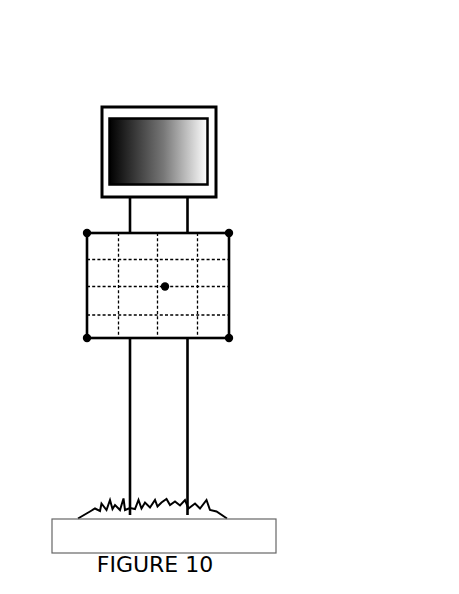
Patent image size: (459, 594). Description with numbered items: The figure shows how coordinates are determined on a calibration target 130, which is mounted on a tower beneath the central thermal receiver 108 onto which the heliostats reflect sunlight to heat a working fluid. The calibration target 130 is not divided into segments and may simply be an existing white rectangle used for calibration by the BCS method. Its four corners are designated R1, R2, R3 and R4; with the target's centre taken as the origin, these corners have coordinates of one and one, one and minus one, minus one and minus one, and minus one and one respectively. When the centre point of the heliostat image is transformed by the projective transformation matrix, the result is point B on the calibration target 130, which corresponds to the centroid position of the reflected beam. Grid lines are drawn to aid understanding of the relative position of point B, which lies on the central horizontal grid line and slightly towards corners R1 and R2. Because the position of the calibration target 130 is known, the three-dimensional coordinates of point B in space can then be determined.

The central thermal receiver 108 is at (202, 108).
The calibration target 130 is at (208, 301).
The corner point R1 is at (242, 225).
The corner point R2 is at (242, 348).
The corner point R3 is at (74, 348).
The corner point R4 is at (74, 225).
The point B is at (172, 277).